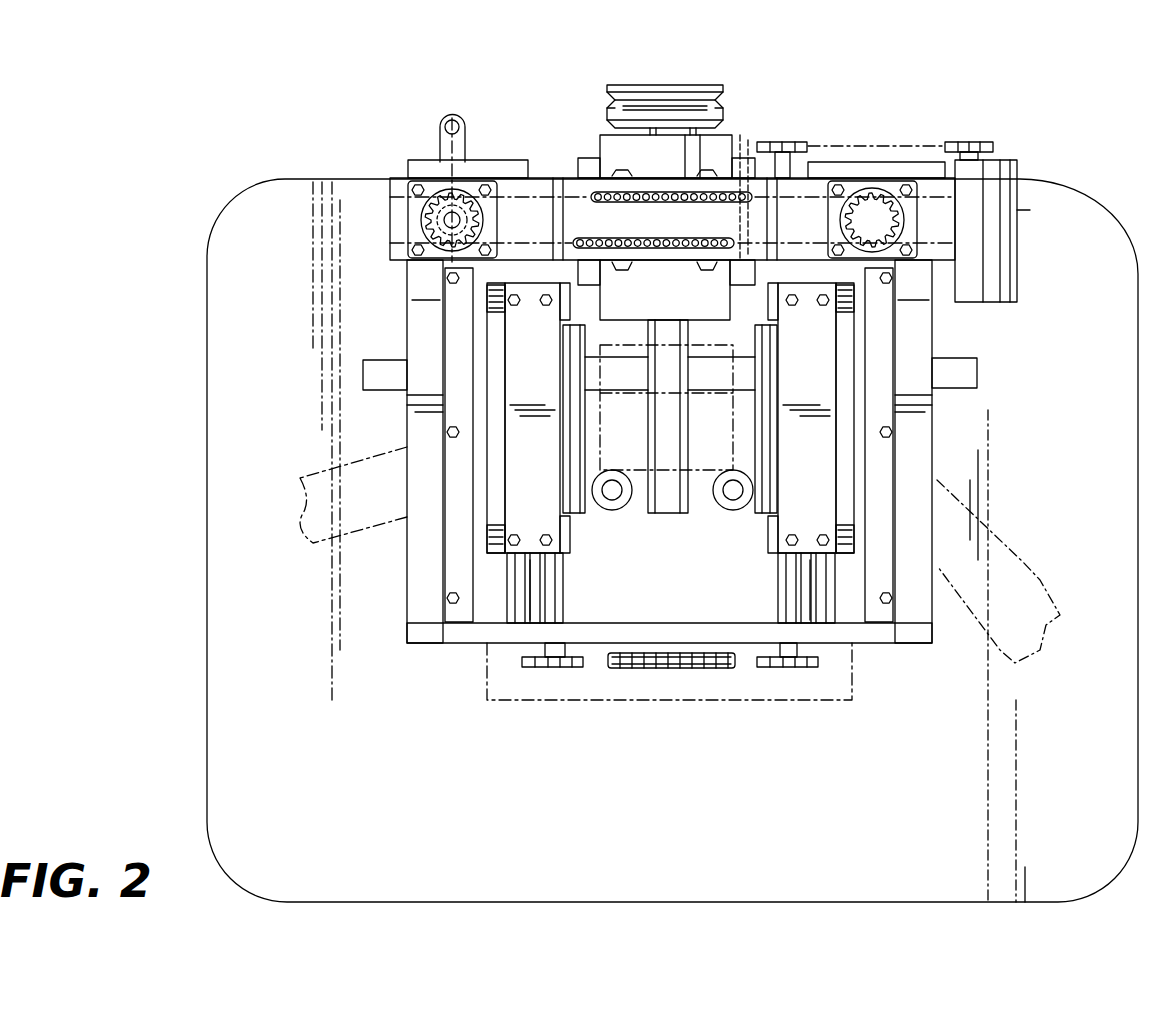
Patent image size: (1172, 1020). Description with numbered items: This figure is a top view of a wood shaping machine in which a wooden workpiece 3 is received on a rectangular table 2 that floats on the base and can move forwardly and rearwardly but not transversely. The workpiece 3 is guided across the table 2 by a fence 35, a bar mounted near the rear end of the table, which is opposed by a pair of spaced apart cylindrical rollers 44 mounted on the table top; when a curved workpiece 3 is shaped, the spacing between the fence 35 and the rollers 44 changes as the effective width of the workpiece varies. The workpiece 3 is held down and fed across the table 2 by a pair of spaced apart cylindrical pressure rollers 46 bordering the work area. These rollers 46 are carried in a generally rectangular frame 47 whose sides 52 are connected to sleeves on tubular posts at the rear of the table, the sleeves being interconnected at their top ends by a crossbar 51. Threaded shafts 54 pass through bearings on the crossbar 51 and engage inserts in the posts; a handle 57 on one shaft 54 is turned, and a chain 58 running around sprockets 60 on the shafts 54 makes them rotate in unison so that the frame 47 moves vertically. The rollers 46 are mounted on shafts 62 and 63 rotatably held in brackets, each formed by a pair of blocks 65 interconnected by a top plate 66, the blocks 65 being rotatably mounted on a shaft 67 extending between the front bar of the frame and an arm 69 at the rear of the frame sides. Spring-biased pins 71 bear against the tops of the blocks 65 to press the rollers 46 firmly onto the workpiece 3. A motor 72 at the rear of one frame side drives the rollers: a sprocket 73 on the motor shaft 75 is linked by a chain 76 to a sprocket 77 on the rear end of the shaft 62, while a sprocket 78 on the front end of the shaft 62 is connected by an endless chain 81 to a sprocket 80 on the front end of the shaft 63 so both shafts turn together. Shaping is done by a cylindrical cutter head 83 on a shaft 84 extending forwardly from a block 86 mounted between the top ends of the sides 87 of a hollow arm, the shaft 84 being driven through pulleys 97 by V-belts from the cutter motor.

The table 2 is at (786, 815).
The wooden workpiece 3 is at (1028, 560).
The fence 35 is at (388, 378).
The rollers 44 is at (605, 511).
The pressure rollers 46 is at (573, 415).
The frame 47 is at (407, 643).
The crossbar 51 is at (543, 178).
The sides 52 is at (418, 279).
The shafts 54 is at (446, 222).
The handle 57 is at (450, 118).
The chain 58 is at (594, 195).
The sprockets 60 is at (430, 198).
The shaft 62 is at (793, 595).
The shaft 63 is at (548, 595).
The blocks 65 is at (553, 305).
The top plate 66 is at (545, 491).
The shaft 67 is at (505, 590).
The arm 69 is at (455, 285).
The pins 71 is at (490, 302).
The motor 72 is at (1012, 210).
The sprocket 73 is at (966, 142).
The motor shaft 75 is at (995, 158).
The chain 76 is at (862, 140).
The sprocket 77 is at (782, 142).
The sprocket 78 is at (808, 668).
The sprocket 80 is at (545, 668).
The endless chain 81 is at (660, 668).
The cutter head 83 is at (630, 512).
The shaft 84 is at (668, 520).
The block 86 is at (720, 150).
The sides 87 is at (748, 125).
The pulleys 97 is at (660, 95).